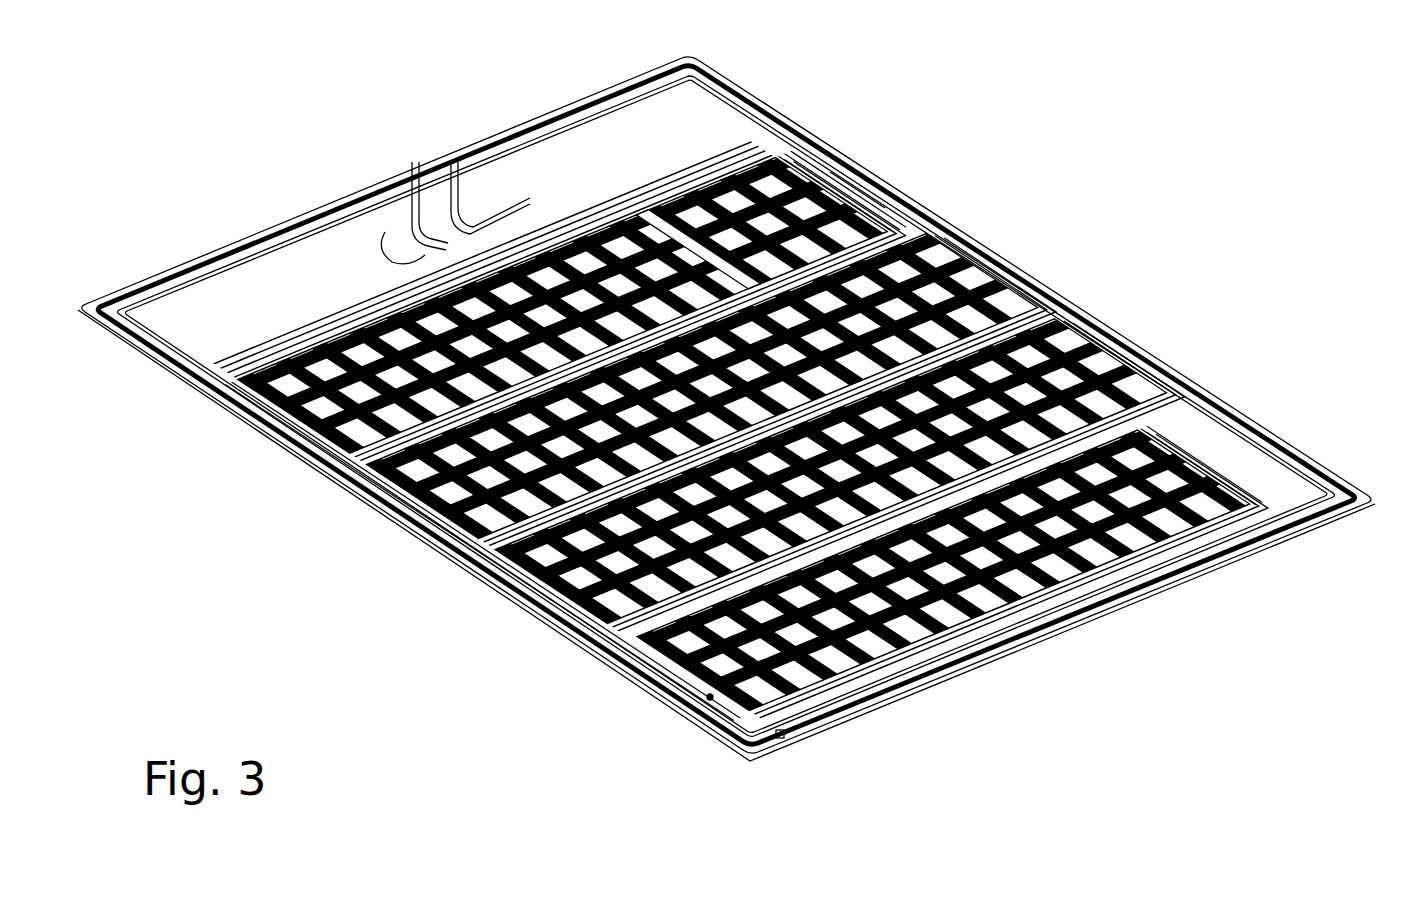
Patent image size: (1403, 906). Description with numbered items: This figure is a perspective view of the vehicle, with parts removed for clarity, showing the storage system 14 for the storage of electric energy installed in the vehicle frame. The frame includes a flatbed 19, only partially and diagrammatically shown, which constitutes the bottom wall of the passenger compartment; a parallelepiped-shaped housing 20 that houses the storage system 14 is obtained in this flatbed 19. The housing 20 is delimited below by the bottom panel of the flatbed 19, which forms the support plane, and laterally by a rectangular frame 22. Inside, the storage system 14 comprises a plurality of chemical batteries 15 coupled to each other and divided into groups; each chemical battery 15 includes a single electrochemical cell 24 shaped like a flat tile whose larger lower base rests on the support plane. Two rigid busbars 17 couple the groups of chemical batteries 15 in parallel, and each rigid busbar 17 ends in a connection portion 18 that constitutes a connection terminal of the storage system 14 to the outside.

The storage system 14 is at (1133, 88).
The chemical battery 15 is at (865, 195).
The rigid busbar 17 is at (1070, 296).
The connection portion 18 is at (422, 165).
The flatbed 19 is at (1100, 660).
The housing 20 is at (710, 702).
The frame 22 is at (413, 527).
The electrochemical cell 24 is at (782, 738).